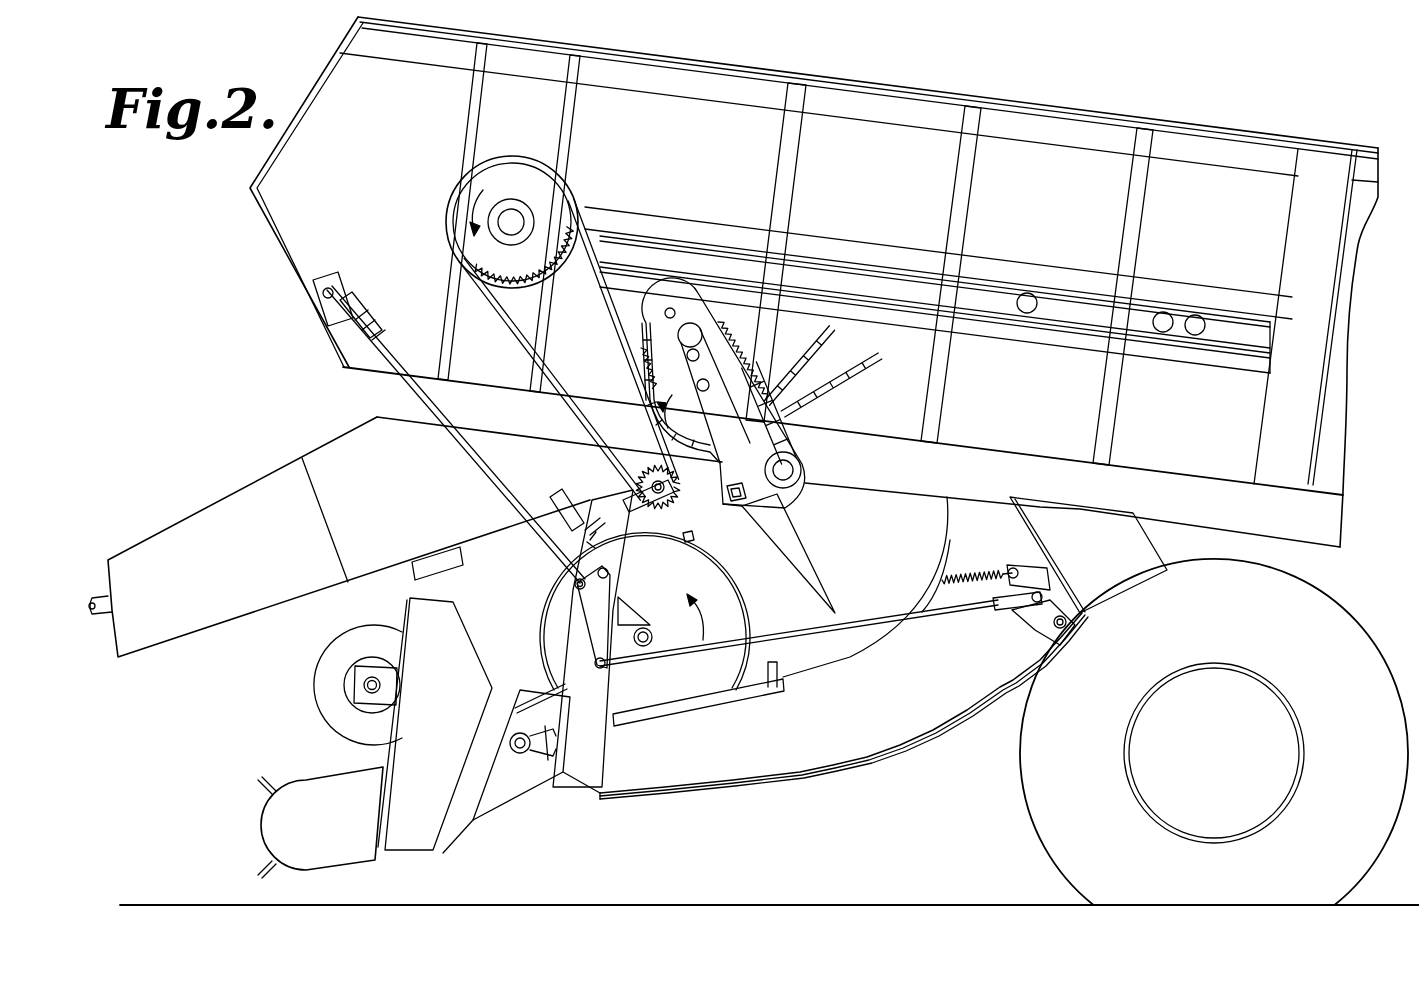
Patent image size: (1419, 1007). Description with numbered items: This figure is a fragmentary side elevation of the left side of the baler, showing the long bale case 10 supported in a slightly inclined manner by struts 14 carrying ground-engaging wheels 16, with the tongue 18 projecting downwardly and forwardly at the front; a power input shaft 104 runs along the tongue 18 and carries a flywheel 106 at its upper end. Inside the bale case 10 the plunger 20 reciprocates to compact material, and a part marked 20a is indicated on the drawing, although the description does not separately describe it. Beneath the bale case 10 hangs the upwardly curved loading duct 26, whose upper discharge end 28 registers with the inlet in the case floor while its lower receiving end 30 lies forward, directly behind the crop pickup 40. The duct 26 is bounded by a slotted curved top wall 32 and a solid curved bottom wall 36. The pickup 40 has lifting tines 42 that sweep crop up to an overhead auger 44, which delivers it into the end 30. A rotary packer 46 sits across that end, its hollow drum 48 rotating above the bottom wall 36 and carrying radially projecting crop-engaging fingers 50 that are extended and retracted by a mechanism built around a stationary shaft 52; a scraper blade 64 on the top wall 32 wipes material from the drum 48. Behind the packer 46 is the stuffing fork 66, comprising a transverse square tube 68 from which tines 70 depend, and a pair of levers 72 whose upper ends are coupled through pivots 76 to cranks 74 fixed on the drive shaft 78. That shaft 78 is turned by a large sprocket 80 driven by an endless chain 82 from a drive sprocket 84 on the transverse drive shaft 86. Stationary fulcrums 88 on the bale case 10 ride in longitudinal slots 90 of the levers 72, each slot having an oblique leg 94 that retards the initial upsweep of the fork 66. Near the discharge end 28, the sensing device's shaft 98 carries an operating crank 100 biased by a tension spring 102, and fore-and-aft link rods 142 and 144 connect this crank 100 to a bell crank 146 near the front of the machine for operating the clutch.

The bale case 10 is at (949, 82).
The struts 14 is at (1145, 558).
The ground-engaging wheels 16 is at (1358, 652).
The tongue 18 is at (232, 506).
The plunger 20 is at (1228, 345).
The conveyor rollers 20a is at (1240, 310).
The loading duct 26 is at (862, 778).
The upper discharge end 28 is at (952, 512).
The lower receiving end 30 is at (545, 785).
The curved top wall 32 is at (920, 588).
The curved bottom wall 36 is at (940, 735).
The crop pickup 40 is at (300, 762).
The lifting tines 42 is at (266, 858).
The overhead auger 44 is at (318, 686).
The rotary packer 46 is at (748, 614).
The hollow drum 48 is at (546, 596).
The crop-engaging fingers 50 is at (576, 518).
The stationary shaft 52 is at (652, 622).
The scraper blade 64 is at (749, 688).
The stuffing fork 66 is at (643, 325).
The transverse square tube 68 is at (735, 503).
The tines 70 is at (797, 542).
The levers 72 is at (738, 362).
The crank 74 is at (707, 330).
The pivot 76 is at (662, 314).
The drive shaft 78 is at (674, 414).
The large sprocket 80 is at (638, 388).
The endless chain 82 is at (578, 200).
The drive sprocket 84 is at (458, 218).
The drive shaft 86 is at (512, 232).
The stationary fulcrums 88 is at (806, 470).
The slots 90 is at (785, 449).
The obliquely extending leg 94 is at (684, 346).
The shaft 98 is at (1075, 627).
The operating crank 100 is at (1032, 585).
The tension spring 102 is at (976, 574).
The power input shaft 104 is at (96, 590).
The flywheel 106 is at (412, 580).
The link rod 142 is at (942, 615).
The link rod 144 is at (478, 480).
The bell crank 146 is at (348, 298).